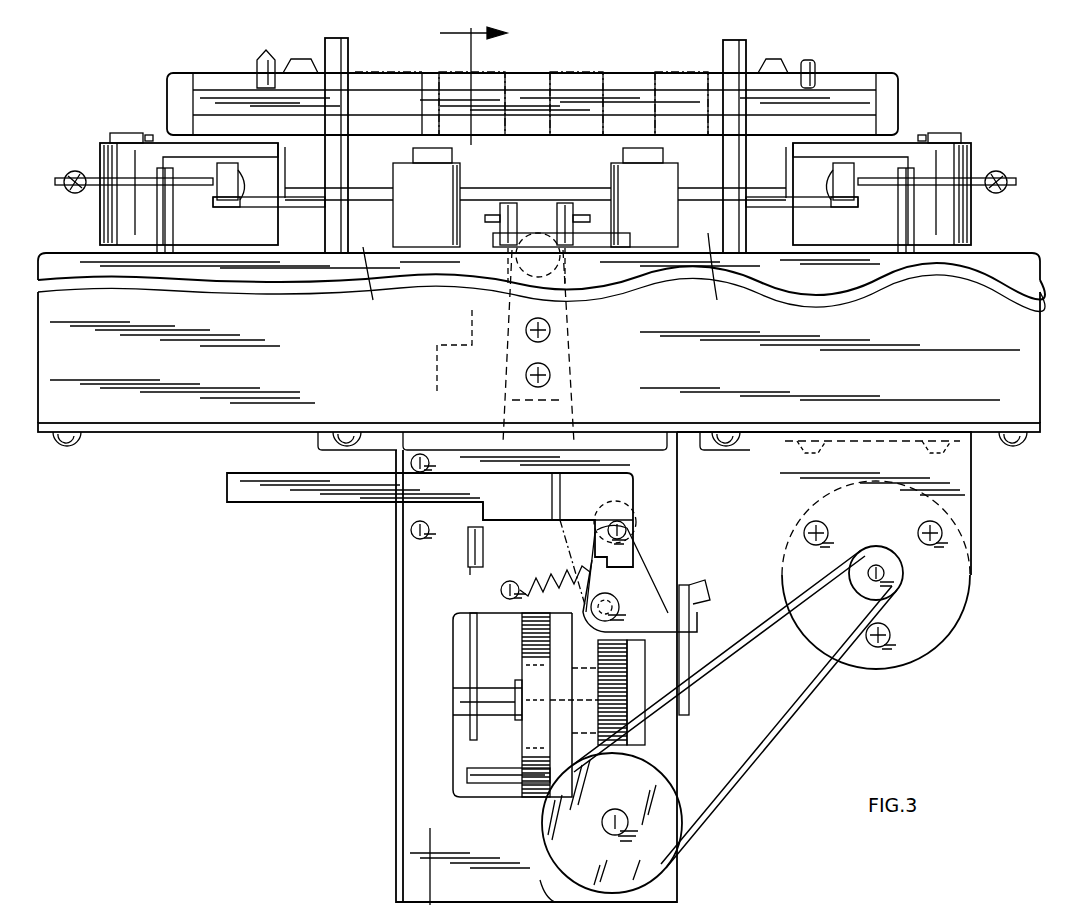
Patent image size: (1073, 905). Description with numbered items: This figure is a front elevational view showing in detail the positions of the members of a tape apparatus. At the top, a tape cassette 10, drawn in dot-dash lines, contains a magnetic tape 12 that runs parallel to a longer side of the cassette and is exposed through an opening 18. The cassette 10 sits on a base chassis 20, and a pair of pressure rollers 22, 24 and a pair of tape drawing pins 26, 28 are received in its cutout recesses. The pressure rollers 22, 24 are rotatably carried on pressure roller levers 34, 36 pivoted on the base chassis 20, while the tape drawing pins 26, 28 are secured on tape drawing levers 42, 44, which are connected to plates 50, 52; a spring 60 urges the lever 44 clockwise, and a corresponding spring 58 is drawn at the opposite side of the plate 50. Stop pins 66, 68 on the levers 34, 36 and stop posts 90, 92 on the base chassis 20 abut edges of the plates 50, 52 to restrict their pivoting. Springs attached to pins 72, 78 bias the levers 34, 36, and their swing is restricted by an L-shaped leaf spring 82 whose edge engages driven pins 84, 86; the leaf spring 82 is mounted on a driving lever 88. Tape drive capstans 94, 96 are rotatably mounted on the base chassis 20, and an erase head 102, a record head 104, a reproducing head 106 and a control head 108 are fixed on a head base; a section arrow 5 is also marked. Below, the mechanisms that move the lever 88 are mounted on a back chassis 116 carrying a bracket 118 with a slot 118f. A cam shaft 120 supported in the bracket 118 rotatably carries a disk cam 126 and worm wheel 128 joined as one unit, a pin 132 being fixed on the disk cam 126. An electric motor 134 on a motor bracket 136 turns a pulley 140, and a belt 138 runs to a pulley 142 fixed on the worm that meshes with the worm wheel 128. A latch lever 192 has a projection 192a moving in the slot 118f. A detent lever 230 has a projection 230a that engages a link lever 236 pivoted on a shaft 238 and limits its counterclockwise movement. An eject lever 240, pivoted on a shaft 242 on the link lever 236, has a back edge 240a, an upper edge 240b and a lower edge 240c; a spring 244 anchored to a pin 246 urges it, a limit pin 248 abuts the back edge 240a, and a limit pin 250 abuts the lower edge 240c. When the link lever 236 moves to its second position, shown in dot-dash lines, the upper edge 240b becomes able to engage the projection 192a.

The section line 5 is at (481, 83).
The tape cassette 10 is at (868, 72).
The magnetic tape 12 is at (846, 88).
The opening 18 is at (527, 90).
The base chassis 20 is at (992, 252).
The pressure roller 22 is at (774, 70).
The pressure roller 24 is at (296, 68).
The tape drawing pin 26 is at (812, 60).
The tape drawing pin 28 is at (263, 50).
The pressure roller lever 34 is at (758, 212).
The pressure roller lever 36 is at (275, 210).
The tape drawing lever 42 is at (972, 158).
The tape drawing lever 44 is at (100, 150).
The plate 50 is at (988, 178).
The plate 52 is at (92, 178).
The shaft 58 is at (1008, 182).
The spring 60 is at (62, 198).
The stop pin 66 is at (840, 208).
The stop pin 68 is at (236, 208).
The pin 72 is at (706, 274).
The pin 78 is at (370, 284).
The L-shaped leaf spring 82 is at (580, 200).
The driven pin 84 is at (505, 203).
The driven pin 86 is at (560, 203).
The driving lever 88 is at (574, 415).
The stop post 90 is at (898, 215).
The stop post 92 is at (174, 230).
The tape drive capstan 94 is at (744, 50).
The tape drive capstan 96 is at (348, 50).
The erase head 102 is at (698, 70).
The record head 104 is at (482, 70).
The reproducing head 106 is at (375, 70).
The control head 108 is at (568, 70).
The back chassis 116 is at (160, 433).
The bracket 118 is at (536, 668).
The slot 118f is at (468, 548).
The cam shaft 120 is at (460, 686).
The disk cam 126 is at (522, 650).
The worm wheel 128 is at (598, 658).
The pin 132 is at (497, 785).
The electric motor 134 is at (960, 510).
The motor bracket 136 is at (972, 470).
The belt 138 is at (796, 712).
The pulley 140 is at (876, 565).
The pulley 142 is at (668, 860).
The latch lever 192 is at (470, 735).
The projection 192a is at (470, 567).
The detent lever 230 is at (690, 700).
The projection 230a is at (700, 590).
The link lever 236 is at (697, 620).
The shaft 238 is at (618, 600).
The eject lever 240 is at (230, 500).
The back edge 240a is at (330, 472).
The upper edge 240b is at (580, 533).
The lower edge 240c is at (375, 510).
The shaft 242 is at (626, 529).
The spring 244 is at (540, 580).
The pin 246 is at (500, 590).
The limit pin 248 is at (418, 452).
The limit pin 250 is at (411, 535).